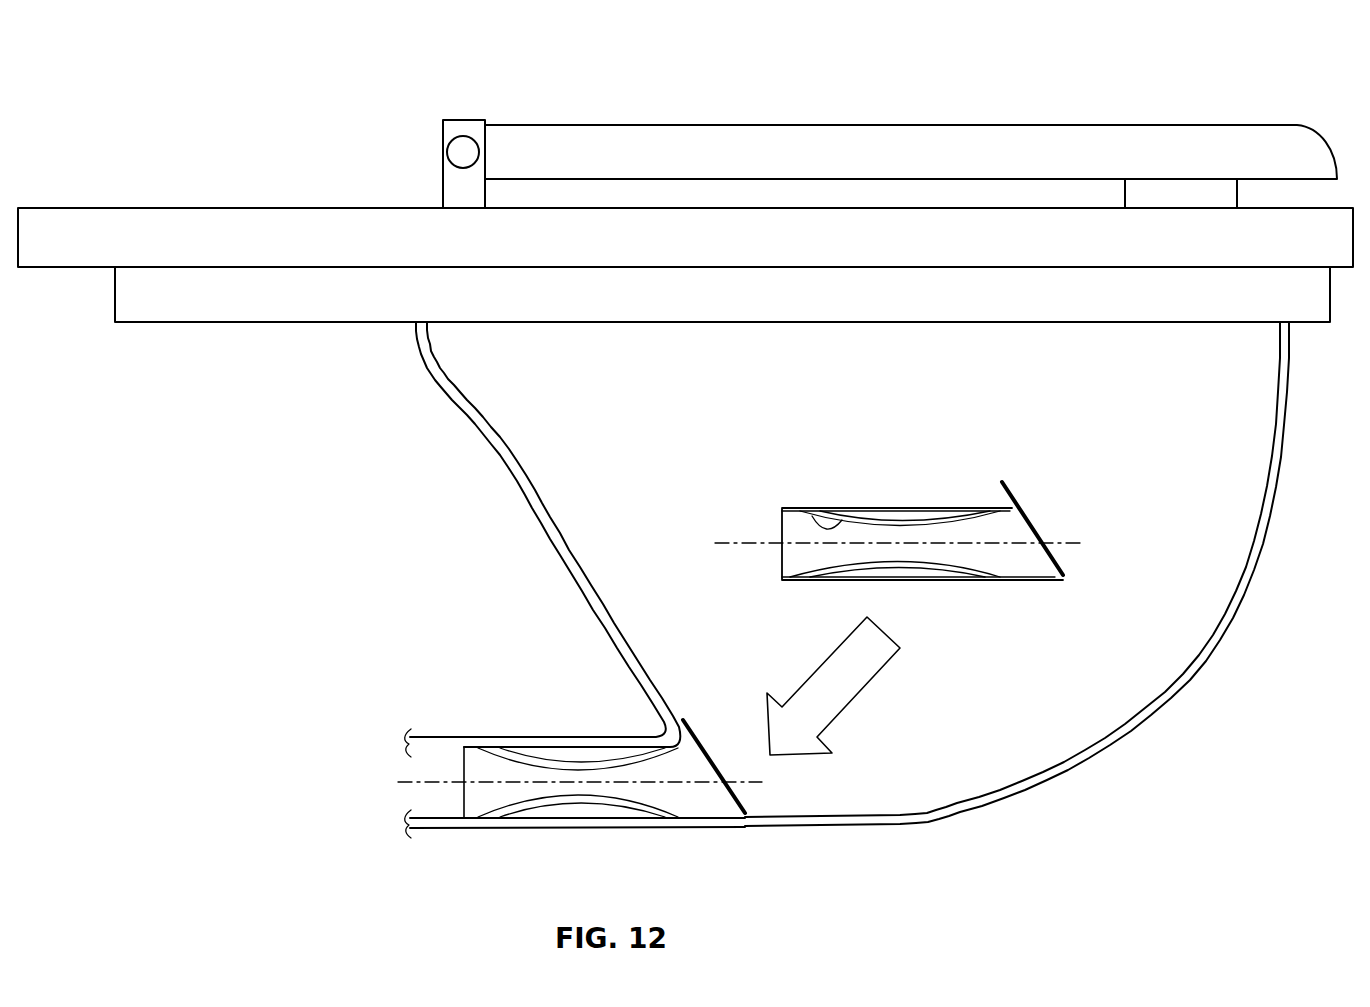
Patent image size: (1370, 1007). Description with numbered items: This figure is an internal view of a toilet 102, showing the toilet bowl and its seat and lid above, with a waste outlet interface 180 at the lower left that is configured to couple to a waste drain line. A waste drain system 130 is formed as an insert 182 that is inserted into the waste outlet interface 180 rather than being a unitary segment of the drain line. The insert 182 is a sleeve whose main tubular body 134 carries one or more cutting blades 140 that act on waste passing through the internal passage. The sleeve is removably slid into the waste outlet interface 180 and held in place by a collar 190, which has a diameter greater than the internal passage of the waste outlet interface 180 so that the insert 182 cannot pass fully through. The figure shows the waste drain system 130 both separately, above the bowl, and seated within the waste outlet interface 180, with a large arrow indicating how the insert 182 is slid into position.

The toilet 102 is at (426, 63).
The waste drain system 130 is at (1037, 482).
The main tubular body 134 is at (964, 508).
The cutting blades 140 is at (816, 527).
The waste outlet interface 180 is at (652, 735).
The insert 182 is at (703, 722).
The collar 190 is at (689, 719).